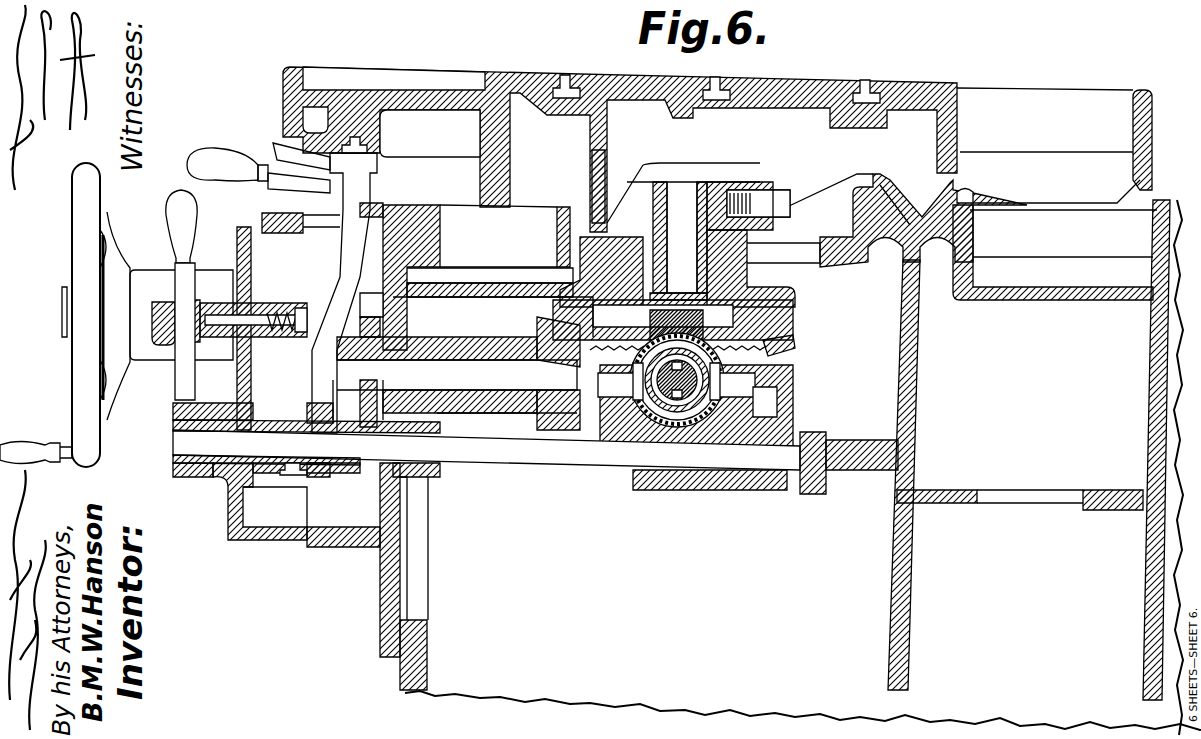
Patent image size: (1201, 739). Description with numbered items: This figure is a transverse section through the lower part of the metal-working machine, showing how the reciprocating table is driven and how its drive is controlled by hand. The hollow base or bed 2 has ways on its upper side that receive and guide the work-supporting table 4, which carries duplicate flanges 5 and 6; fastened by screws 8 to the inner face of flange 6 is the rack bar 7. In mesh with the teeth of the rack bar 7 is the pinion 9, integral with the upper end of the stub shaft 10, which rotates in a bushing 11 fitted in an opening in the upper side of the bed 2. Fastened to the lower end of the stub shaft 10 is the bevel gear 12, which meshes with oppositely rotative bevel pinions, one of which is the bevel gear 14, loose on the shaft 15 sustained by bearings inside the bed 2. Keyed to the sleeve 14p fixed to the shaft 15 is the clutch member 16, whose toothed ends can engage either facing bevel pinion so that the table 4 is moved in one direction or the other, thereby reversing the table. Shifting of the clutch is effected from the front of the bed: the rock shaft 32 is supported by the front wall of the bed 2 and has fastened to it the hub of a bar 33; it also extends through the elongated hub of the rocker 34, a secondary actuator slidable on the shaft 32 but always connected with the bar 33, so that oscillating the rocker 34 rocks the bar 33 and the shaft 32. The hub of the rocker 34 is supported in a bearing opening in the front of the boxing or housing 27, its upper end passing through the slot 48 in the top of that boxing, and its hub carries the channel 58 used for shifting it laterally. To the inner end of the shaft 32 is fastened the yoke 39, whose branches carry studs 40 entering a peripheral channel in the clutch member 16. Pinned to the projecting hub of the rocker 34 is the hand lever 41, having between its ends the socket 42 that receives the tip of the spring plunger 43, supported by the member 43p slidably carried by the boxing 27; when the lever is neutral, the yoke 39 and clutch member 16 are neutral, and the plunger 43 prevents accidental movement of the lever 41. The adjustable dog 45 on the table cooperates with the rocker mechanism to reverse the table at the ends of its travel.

The base or bed 2 is at (912, 410).
The work-supporting table 4 is at (790, 90).
The flange 5 is at (596, 152).
The flange 6 is at (775, 152).
The rack bar 7 is at (712, 195).
The screws 8 is at (790, 190).
The pinion 9 is at (655, 200).
The stub shaft 10 is at (680, 240).
The bushing 11 is at (745, 270).
The bevel gear 12 is at (800, 352).
The bevel gear 14 is at (760, 380).
The sleeve 14p is at (610, 440).
The shaft 15 is at (655, 410).
The clutch member 16 is at (690, 400).
The boxing or housing 27 is at (232, 540).
The rock shaft 32 is at (497, 452).
The bar 33 is at (340, 473).
The rocker 34 is at (350, 255).
The yoke 39 is at (672, 430).
The studs 40 is at (770, 410).
The hand lever 41 is at (170, 395).
The socket 42 is at (176, 345).
The spring plunger 43 is at (250, 300).
The member 43p is at (200, 280).
The adjustable dog 45 is at (377, 178).
The slot 48 is at (400, 228).
The channel 58 is at (295, 475).